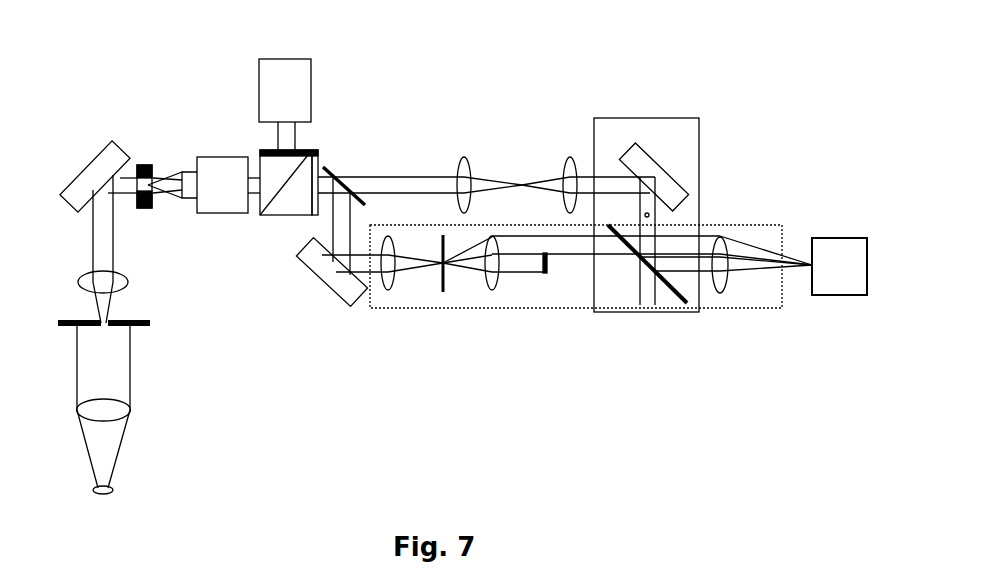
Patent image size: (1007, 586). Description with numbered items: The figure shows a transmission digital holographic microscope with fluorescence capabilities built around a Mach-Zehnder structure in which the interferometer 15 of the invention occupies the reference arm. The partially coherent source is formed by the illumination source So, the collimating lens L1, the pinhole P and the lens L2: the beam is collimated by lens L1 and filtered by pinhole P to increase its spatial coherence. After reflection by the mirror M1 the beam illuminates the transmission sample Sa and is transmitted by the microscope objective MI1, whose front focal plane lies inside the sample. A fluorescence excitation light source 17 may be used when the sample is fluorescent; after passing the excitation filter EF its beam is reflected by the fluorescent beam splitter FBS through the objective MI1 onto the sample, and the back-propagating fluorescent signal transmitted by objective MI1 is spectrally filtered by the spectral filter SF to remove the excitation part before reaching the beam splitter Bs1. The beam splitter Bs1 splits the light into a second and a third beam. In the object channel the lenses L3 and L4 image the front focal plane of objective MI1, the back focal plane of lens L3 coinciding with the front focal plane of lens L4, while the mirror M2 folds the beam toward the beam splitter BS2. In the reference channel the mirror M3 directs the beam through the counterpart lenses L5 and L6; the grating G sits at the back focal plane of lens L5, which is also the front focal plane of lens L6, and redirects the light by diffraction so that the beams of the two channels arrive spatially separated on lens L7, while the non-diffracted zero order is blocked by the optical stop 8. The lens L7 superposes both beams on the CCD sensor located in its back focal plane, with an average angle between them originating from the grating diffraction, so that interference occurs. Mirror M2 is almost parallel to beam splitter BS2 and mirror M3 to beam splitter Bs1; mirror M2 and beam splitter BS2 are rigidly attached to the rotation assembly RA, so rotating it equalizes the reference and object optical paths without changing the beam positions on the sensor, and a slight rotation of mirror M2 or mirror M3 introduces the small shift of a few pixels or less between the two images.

The mirror M1 is at (89, 165).
The lens L2 is at (79, 287).
The pinhole in a screen P is at (96, 341).
The collimating lens L1 is at (127, 407).
The illumination source So is at (129, 503).
The transmission sample or sample holder Sa is at (164, 144).
The microscope objective MI1 is at (209, 204).
The fluorescent beam splitter FBS is at (277, 201).
The excitation filter EF is at (257, 150).
The spectral filter SF is at (317, 150).
The fluorescence excitation light source 17 is at (311, 83).
The beam splitter Bs1 is at (358, 171).
The lens L3 is at (463, 163).
The lens L4 is at (560, 163).
The rotation assembly RA is at (698, 92).
The mirror M2 is at (655, 168).
The mirror M3 is at (323, 280).
The lens L5 is at (390, 286).
The grating G is at (442, 285).
The lens L6 is at (493, 286).
The optical stop 8 is at (547, 270).
The interferometer of the invention 15 is at (723, 227).
The beam splitter BS2 is at (645, 265).
The lens L7 is at (741, 285).
The CCD sensor CCD is at (832, 246).